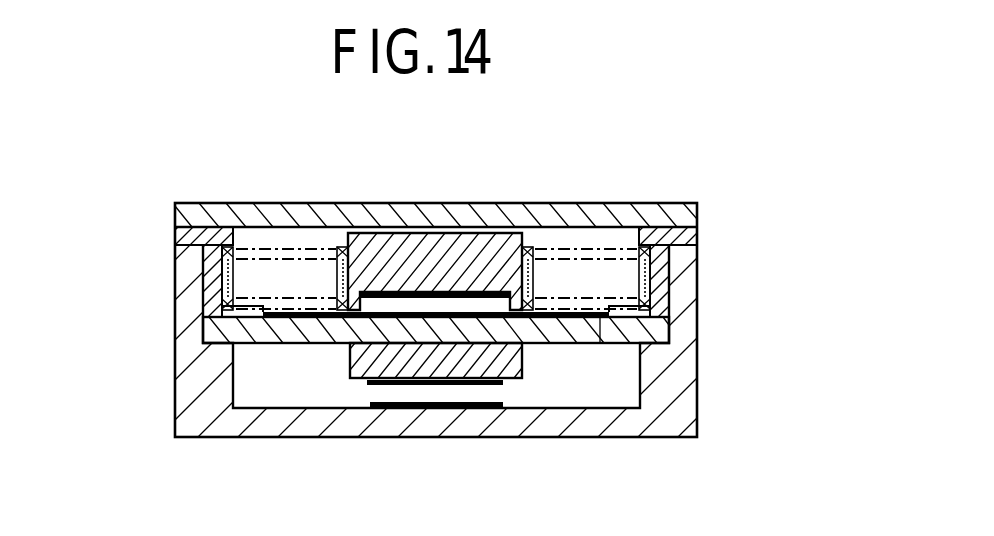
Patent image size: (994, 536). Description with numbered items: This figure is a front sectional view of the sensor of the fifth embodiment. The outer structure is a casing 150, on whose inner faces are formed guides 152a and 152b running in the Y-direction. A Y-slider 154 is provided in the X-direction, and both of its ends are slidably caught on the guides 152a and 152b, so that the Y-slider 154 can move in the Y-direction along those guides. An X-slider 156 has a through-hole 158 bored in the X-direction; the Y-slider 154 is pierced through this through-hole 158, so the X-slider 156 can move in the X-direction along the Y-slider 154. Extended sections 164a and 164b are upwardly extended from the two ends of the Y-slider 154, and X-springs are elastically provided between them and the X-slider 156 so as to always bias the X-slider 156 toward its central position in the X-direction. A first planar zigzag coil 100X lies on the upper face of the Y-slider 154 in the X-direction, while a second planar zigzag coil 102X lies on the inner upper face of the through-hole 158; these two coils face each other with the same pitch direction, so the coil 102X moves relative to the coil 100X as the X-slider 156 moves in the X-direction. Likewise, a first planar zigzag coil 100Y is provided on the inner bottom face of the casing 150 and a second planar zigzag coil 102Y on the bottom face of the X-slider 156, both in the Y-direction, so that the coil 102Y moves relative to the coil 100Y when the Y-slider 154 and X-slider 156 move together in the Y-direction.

The casing 150 is at (197, 405).
The guide 152a is at (662, 336).
The guide 152b is at (223, 340).
The Y-slider 154 is at (290, 348).
The X-slider 156 is at (446, 252).
The through-hole 158 is at (408, 343).
The extended section 164a is at (658, 270).
The extended section 164b is at (213, 272).
The first planar zigzag coil 100X is at (583, 308).
The first planar zigzag coil 100Y is at (502, 403).
The second planar zigzag coil 102X is at (444, 299).
The second planar zigzag coil 102Y is at (377, 388).